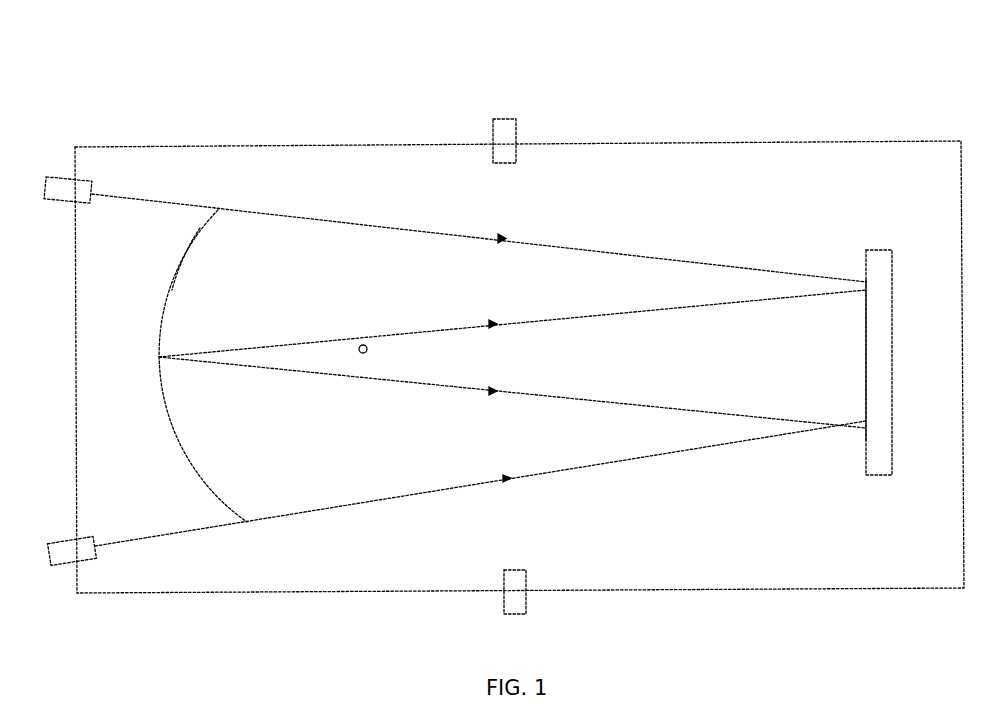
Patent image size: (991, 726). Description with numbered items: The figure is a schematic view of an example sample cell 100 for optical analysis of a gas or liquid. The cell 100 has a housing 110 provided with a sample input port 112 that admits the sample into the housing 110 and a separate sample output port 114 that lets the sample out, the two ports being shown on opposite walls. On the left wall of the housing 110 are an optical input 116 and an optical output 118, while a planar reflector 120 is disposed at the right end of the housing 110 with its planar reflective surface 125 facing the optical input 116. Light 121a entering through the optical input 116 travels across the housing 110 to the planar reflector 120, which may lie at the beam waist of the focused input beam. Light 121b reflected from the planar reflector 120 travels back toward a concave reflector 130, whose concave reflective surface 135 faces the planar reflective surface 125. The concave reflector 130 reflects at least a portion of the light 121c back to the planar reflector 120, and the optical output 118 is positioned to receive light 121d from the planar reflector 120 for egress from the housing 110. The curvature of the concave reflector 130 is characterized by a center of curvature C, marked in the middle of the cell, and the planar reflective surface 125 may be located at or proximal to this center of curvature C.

The sample cell 100 is at (784, 74).
The housing 110 is at (615, 143).
The sample input port 112 is at (508, 120).
The sample output port 114 is at (525, 582).
The optical input 116 is at (80, 186).
The optical output 118 is at (80, 540).
The planar reflector 120 is at (877, 250).
The planar reflective surface 125 is at (865, 302).
The concave reflector 130 is at (194, 238).
The concave reflective surface 135 is at (183, 262).
The center of curvature C is at (368, 344).
The light 121a is at (142, 200).
The light 121b is at (530, 320).
The light 121c is at (547, 398).
The light 121d is at (128, 542).